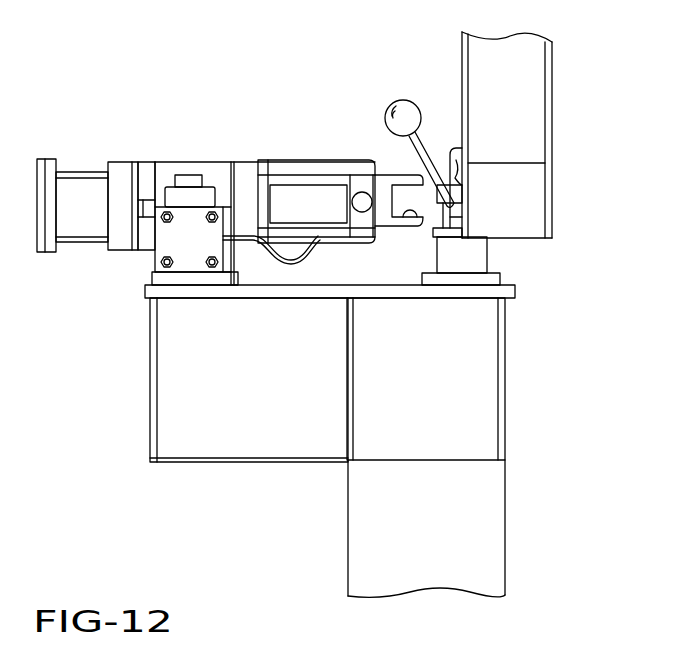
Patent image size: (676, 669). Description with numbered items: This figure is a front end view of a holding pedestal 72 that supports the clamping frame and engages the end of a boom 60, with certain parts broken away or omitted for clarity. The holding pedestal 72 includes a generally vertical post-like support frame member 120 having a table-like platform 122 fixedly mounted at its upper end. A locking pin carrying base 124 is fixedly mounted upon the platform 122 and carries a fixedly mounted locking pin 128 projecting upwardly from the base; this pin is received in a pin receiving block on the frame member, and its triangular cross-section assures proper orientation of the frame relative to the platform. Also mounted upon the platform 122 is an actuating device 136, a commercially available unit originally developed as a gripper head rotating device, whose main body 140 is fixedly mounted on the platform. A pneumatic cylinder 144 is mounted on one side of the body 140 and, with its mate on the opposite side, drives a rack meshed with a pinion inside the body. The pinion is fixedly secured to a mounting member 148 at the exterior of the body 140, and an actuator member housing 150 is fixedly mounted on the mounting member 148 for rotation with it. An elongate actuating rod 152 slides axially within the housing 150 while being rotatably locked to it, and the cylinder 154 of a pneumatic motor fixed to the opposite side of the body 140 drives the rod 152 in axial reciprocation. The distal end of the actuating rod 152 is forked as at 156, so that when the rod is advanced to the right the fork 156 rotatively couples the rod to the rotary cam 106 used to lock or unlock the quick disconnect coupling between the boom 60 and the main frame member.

The cylinder 154 is at (67, 163).
The actuating device 136 is at (248, 110).
The mounting member 148 is at (245, 163).
The actuator member housing 150 is at (302, 165).
The actuating rod 152 is at (388, 172).
The fork 156 is at (416, 226).
The rotary cam 106 is at (437, 168).
The locking pin 128 is at (450, 167).
The boom 60 is at (537, 128).
The locking pin carrying base 124 is at (478, 262).
The main body 140 is at (152, 275).
The pneumatic cylinder 144 is at (197, 253).
The platform 122 is at (174, 398).
The holding pedestal 72 is at (511, 426).
The support frame member 120 is at (490, 515).